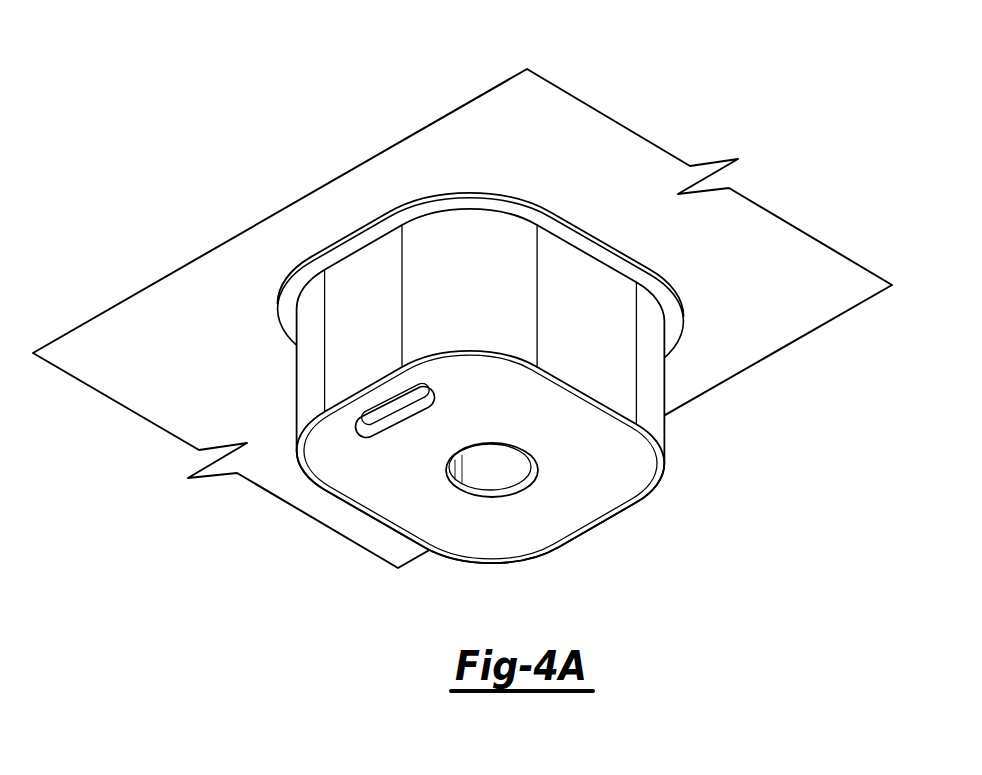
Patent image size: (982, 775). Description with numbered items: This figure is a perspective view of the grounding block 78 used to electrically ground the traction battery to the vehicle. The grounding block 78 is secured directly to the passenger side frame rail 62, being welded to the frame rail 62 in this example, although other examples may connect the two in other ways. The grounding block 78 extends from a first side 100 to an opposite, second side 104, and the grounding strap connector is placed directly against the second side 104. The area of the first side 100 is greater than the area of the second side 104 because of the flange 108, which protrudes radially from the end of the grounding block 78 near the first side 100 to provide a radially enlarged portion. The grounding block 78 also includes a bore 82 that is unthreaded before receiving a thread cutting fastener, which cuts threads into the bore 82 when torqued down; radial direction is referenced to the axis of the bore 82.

The frame rail 62 is at (762, 332).
The first side 100 is at (662, 280).
The flange 108 is at (544, 213).
The second side 104 is at (538, 520).
The grounding block 78 is at (602, 500).
The bore 82 is at (468, 492).